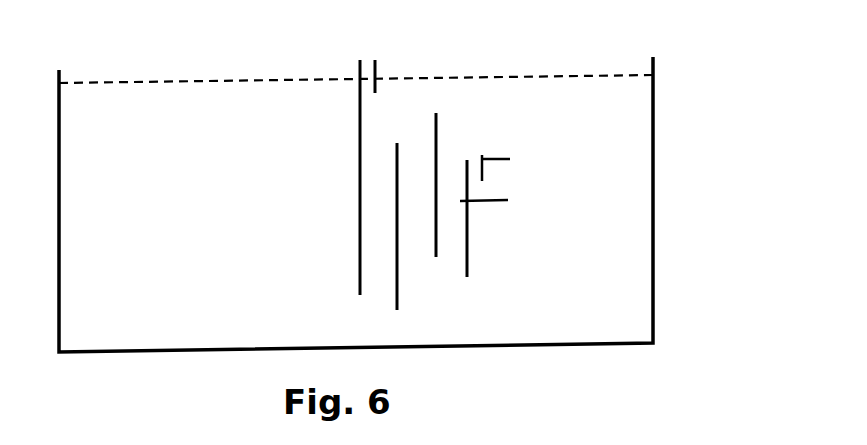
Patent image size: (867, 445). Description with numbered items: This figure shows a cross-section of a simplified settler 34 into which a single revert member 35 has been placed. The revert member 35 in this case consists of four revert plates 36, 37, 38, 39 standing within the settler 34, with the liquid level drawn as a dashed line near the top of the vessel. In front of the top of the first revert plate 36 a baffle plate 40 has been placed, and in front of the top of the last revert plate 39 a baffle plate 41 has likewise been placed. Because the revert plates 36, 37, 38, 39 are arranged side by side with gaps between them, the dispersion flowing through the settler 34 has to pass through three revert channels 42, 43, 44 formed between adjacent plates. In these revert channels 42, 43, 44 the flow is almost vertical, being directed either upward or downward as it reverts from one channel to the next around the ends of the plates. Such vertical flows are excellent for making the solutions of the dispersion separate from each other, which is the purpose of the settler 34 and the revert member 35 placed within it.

The settler 34 is at (656, 126).
The revert member 35 is at (440, 57).
The revert plate 36 is at (360, 150).
The revert plate 37 is at (400, 146).
The revert plate 38 is at (436, 255).
The revert plate 39 is at (467, 231).
The baffle plate 40 is at (376, 60).
The baffle plate 41 is at (515, 164).
The revert channel 42 is at (375, 240).
The revert channel 43 is at (410, 209).
The revert channel 44 is at (504, 201).